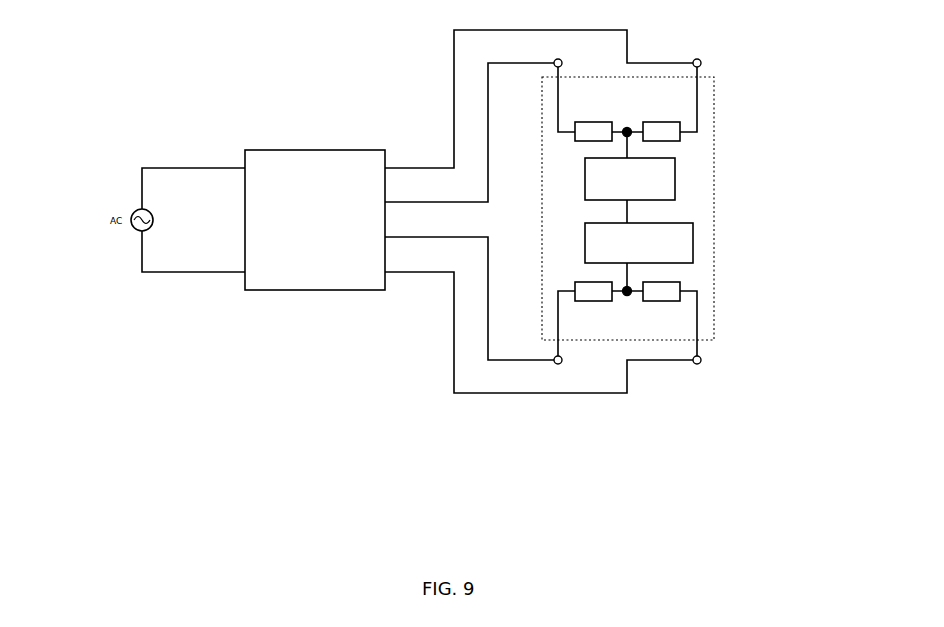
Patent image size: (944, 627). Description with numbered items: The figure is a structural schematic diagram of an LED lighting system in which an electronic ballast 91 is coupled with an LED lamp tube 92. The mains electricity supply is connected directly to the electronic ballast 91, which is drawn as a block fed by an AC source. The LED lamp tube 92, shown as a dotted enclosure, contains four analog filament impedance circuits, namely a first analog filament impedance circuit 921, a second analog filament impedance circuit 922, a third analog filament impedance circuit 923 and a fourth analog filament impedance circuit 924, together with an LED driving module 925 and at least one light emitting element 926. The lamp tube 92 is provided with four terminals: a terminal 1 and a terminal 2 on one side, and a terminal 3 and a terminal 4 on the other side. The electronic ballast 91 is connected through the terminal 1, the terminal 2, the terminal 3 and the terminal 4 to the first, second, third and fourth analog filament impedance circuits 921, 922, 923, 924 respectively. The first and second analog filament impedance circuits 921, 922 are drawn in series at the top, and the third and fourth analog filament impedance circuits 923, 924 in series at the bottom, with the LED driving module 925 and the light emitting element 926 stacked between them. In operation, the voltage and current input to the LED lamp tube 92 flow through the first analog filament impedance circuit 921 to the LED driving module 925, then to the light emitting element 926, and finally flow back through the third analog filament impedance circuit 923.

The electronic ballast 91 is at (300, 150).
The LED lamp tube 92 is at (640, 211).
The first analog filament impedance circuit 921 is at (573, 126).
The second analog filament impedance circuit 922 is at (690, 131).
The third analog filament impedance circuit 923 is at (573, 283).
The fourth analog filament impedance circuit 924 is at (687, 289).
The LED driving module 925 is at (585, 168).
The light emitting element 926 is at (585, 232).
The terminal 1 is at (557, 51).
The terminal 2 is at (696, 51).
The terminal 3 is at (557, 375).
The terminal 4 is at (696, 375).